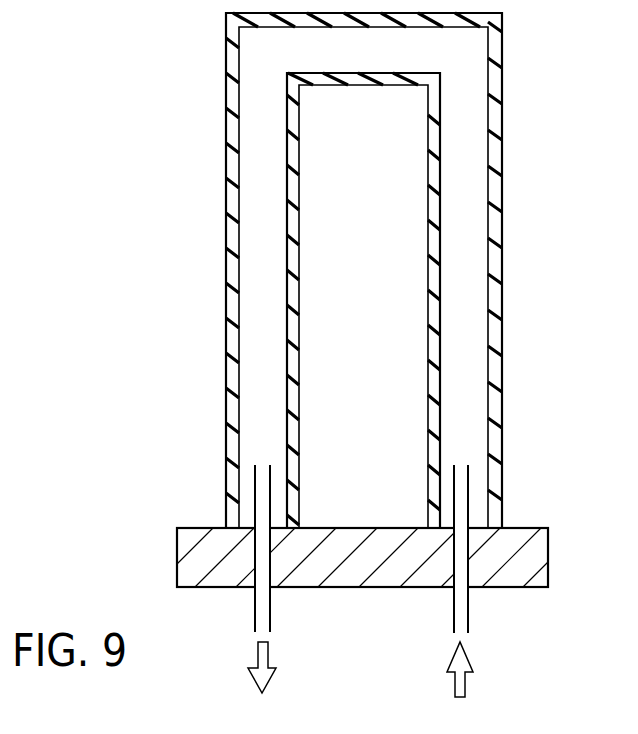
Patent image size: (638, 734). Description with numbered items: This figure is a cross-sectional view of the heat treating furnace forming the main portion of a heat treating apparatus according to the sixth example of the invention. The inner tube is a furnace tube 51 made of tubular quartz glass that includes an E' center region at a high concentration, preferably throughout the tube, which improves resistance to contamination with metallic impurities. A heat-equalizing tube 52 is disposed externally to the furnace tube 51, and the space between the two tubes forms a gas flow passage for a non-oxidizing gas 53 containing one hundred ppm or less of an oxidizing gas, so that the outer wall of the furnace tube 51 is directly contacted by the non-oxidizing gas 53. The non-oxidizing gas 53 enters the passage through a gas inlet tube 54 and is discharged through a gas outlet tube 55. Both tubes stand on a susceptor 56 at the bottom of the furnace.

The furnace tube 51 is at (343, 85).
The heat-equalizing tube 52 is at (502, 132).
The non-oxidizing gas 53 is at (251, 122).
The gas inlet tube 54 is at (470, 625).
The gas outlet tube 55 is at (270, 622).
The susceptor 56 is at (550, 558).